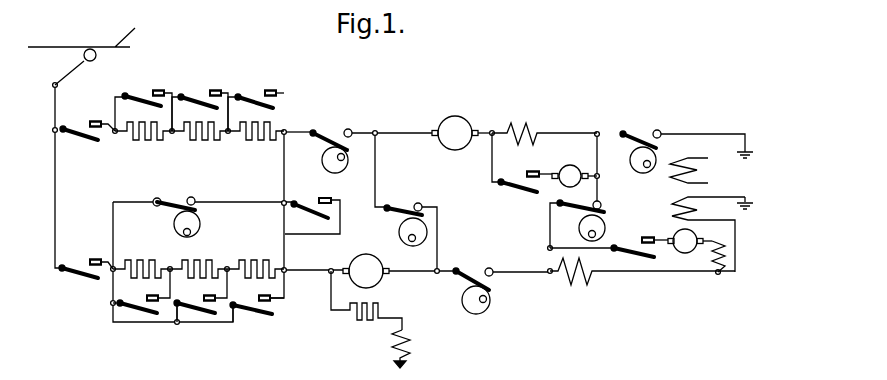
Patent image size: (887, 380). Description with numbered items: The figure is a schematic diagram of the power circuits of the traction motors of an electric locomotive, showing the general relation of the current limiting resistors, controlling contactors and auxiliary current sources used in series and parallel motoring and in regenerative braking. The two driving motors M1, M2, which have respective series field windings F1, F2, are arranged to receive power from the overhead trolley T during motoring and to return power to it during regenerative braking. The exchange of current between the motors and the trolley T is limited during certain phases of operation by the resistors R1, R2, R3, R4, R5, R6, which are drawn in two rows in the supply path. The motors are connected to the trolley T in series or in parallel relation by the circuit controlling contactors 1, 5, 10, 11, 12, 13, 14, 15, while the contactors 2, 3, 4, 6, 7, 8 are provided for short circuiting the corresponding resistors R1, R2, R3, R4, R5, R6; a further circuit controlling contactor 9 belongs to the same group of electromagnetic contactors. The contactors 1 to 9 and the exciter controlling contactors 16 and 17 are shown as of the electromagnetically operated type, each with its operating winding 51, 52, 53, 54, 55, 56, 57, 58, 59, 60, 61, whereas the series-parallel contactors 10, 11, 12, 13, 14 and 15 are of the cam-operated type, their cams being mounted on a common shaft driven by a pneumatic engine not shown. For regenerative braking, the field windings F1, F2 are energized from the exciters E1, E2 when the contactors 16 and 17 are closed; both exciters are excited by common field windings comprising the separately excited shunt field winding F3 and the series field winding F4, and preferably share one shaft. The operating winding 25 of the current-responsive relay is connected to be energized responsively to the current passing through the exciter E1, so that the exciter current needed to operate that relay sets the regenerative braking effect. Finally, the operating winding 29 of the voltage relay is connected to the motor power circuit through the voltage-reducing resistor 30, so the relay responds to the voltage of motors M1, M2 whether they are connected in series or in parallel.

The overhead trolley T is at (87, 52).
The circuit controlling contactor 1 is at (80, 142).
The contactor 2 is at (136, 104).
The contactor 3 is at (191, 105).
The contactor 4 is at (247, 105).
The circuit controlling contactor 5 is at (88, 283).
The contactor 6 is at (137, 318).
The contactor 7 is at (194, 318).
The contactor 8 is at (250, 320).
The circuit controlling contactor 9 is at (299, 210).
The series-parallel contactor 10 is at (174, 201).
The series-parallel contactor 11 is at (400, 206).
The series-parallel contactor 12 is at (472, 268).
The series-parallel contactor 13 is at (333, 129).
The series-parallel contactor 14 is at (605, 209).
The series-parallel contactor 15 is at (634, 131).
The exciter controlling contactor 16 is at (617, 252).
The exciter controlling contactor 17 is at (509, 188).
The operating winding 25 is at (729, 259).
The operating winding 29 is at (410, 336).
The voltage-reducing resistor 30 is at (375, 302).
The operating winding 51 is at (76, 116).
The operating winding 52 is at (138, 88).
The operating winding 53 is at (192, 88).
The operating winding 54 is at (250, 85).
The operating winding 55 is at (70, 258).
The operating winding 56 is at (133, 298).
The operating winding 57 is at (190, 298).
The operating winding 58 is at (247, 298).
The operating winding 59 is at (305, 200).
The operating winding 60 is at (626, 240).
The operating winding 61 is at (513, 173).
The current limiting resistor R1 is at (157, 141).
The current limiting resistor R2 is at (213, 141).
The current limiting resistor R3 is at (263, 141).
The current limiting resistor R4 is at (147, 259).
The current limiting resistor R5 is at (204, 259).
The current limiting resistor R6 is at (260, 259).
The driving motor M1 is at (365, 264).
The driving motor M2 is at (455, 124).
The exciter E1 is at (680, 252).
The exciter E2 is at (571, 169).
The series field winding F1 is at (573, 285).
The series field winding F2 is at (517, 122).
The separately excited shunt field winding F3 is at (672, 177).
The series field winding F4 is at (673, 206).